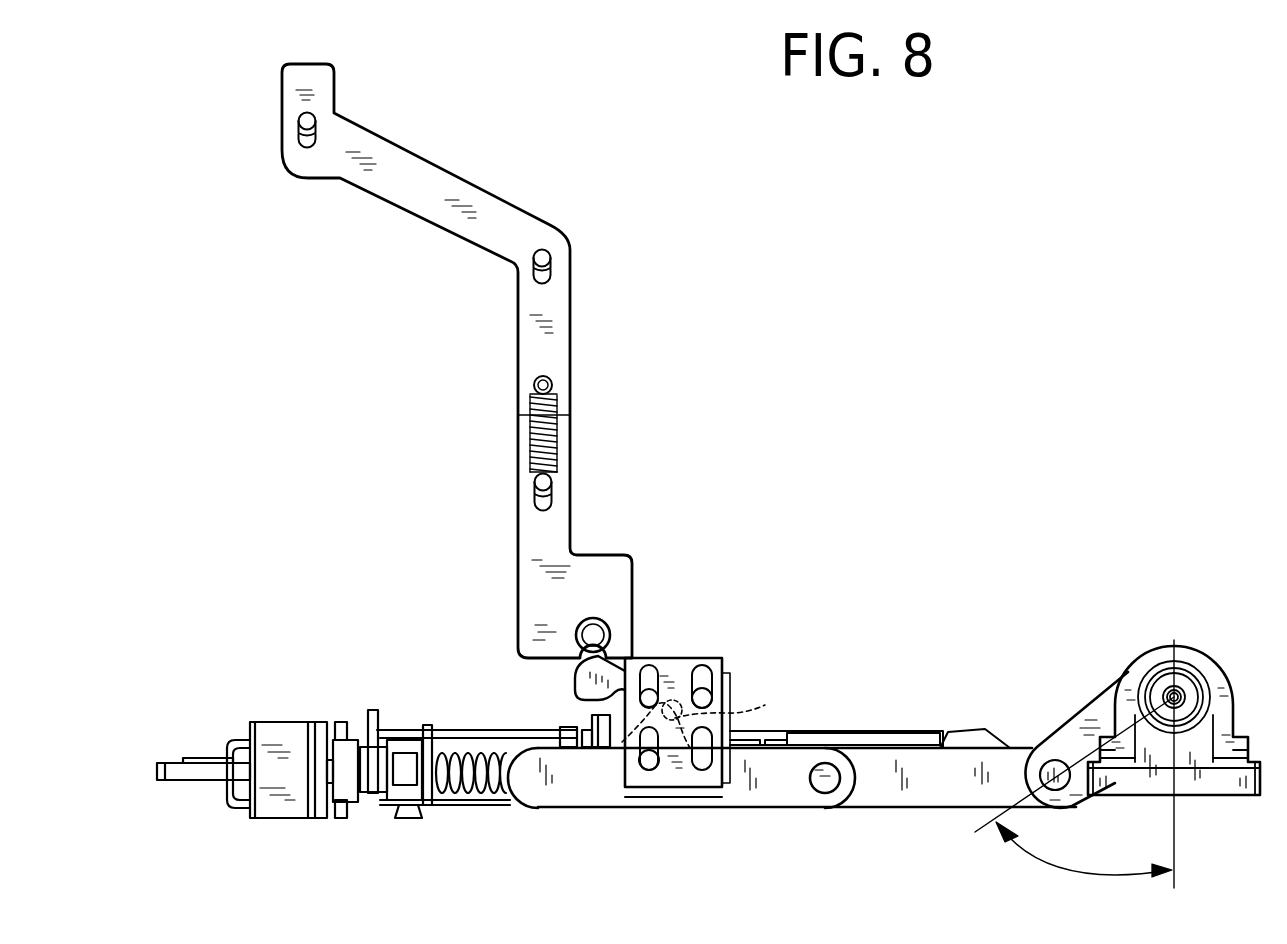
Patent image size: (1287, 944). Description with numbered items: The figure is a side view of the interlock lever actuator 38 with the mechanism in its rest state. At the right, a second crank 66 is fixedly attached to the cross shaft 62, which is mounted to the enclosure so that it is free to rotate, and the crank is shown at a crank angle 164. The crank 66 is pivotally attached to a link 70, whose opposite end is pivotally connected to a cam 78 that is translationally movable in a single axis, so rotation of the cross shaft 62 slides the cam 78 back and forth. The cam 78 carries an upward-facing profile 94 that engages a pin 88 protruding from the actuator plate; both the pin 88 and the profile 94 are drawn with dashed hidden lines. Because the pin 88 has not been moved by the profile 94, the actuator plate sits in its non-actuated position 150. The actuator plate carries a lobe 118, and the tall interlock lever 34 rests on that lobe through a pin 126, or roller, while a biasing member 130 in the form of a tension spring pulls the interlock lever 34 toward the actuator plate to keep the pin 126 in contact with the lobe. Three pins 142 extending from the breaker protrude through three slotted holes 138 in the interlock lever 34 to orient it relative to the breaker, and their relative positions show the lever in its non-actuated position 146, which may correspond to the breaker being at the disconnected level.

The interlock lever 34 is at (570, 302).
The interlock lever actuator 38 is at (912, 330).
The cross shaft 62 is at (1205, 662).
The second crank 66 is at (1078, 710).
The link 70 is at (875, 788).
The cam 78 is at (541, 785).
The pin 88 is at (676, 700).
The profile 94 is at (710, 717).
The lobe 118 is at (574, 678).
The pin 126 is at (600, 618).
The biasing member 130 is at (535, 442).
The slotted holes 138 is at (299, 137).
The pins 142 is at (307, 121).
The non-actuated position 146 is at (592, 321).
The non-actuated position 150 is at (745, 675).
The crank angle 164 is at (1175, 857).